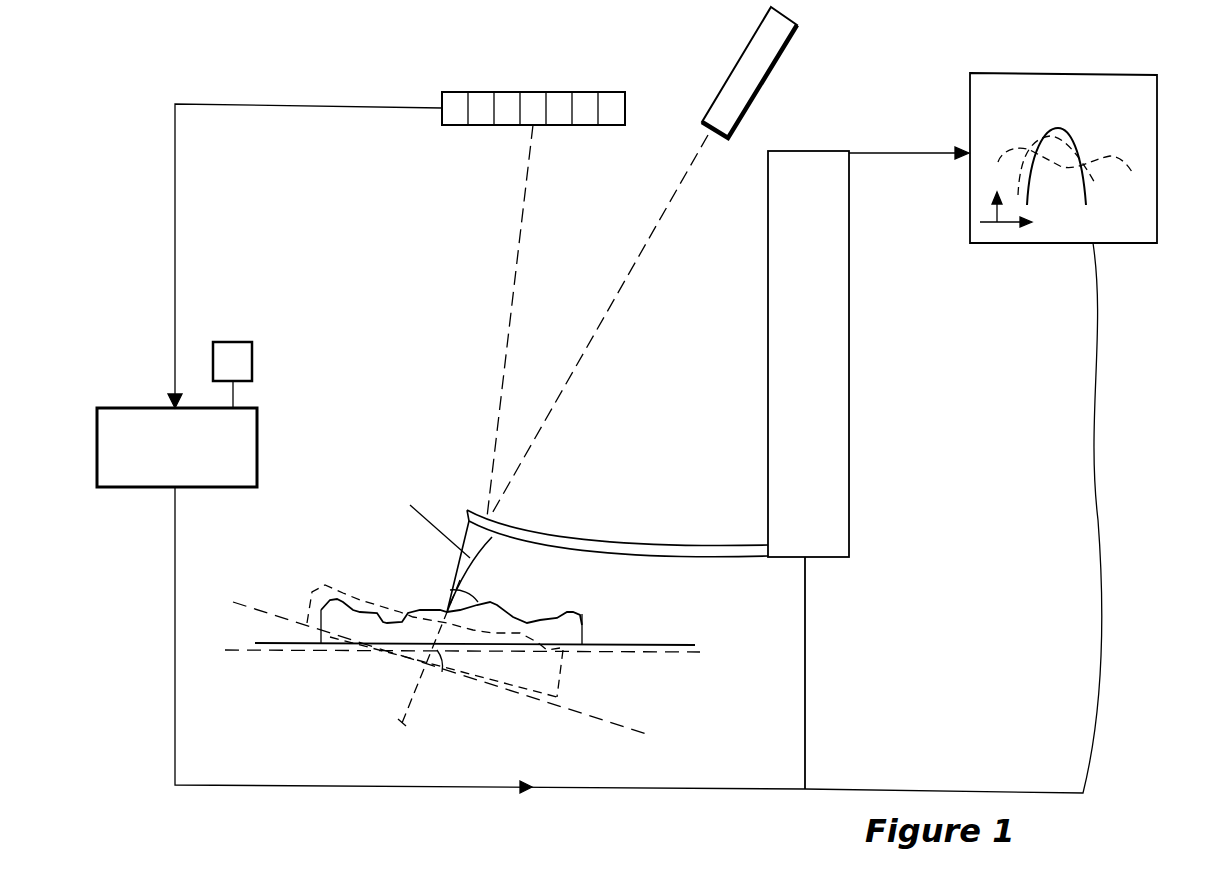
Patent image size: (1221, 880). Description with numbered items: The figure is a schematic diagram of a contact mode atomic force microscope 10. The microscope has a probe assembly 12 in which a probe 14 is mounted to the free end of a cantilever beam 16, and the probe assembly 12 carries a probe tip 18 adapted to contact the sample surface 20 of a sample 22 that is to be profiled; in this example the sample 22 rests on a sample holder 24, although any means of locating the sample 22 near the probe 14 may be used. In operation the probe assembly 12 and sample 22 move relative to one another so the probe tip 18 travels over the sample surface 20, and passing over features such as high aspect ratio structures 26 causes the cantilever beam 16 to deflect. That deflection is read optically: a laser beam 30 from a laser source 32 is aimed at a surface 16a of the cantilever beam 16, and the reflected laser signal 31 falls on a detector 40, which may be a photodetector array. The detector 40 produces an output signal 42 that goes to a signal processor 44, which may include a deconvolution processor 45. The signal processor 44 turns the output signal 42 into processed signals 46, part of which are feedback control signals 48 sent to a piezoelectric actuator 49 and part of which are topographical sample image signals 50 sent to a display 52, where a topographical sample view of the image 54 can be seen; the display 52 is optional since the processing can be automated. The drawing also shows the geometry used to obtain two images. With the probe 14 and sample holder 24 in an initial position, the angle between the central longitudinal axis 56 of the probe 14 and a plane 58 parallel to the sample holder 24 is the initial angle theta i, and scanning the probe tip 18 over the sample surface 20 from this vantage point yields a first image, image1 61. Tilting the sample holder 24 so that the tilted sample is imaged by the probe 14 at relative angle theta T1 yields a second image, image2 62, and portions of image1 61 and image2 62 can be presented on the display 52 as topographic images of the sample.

The contact mode atomic force microscope 10 is at (157, 155).
The probe assembly 12 is at (729, 589).
The probe 14 is at (480, 553).
The cantilever beam 16 is at (667, 558).
The surface of the cantilever beam 16a is at (490, 521).
The probe tip 18 is at (446, 610).
The sample surface 20 is at (505, 607).
The sample 22 is at (583, 632).
The sample holder 24 is at (655, 643).
The high aspect ratio structures 26 is at (396, 608).
The laser beam 30 is at (645, 242).
The reflected laser signal 31 is at (515, 265).
The laser source 32 is at (775, 66).
The detector 40 is at (627, 104).
The output signal 42 is at (247, 103).
The signal processor 44 is at (258, 445).
The deconvolution processor 45 is at (253, 361).
The processed signals 46 is at (173, 628).
The feed back control signals 48 is at (806, 671).
The piezoelectric actuator 49 is at (850, 366).
The topographical sample image signals 50 is at (1100, 542).
The display 52 is at (1157, 128).
The topographical sample view of the image 54 is at (1118, 155).
The central longitudinal axis of the probe 56 is at (406, 725).
The plane parallel with the sample holder 58 is at (235, 652).
The image1 61 is at (1056, 128).
The image2 62 is at (1030, 142).